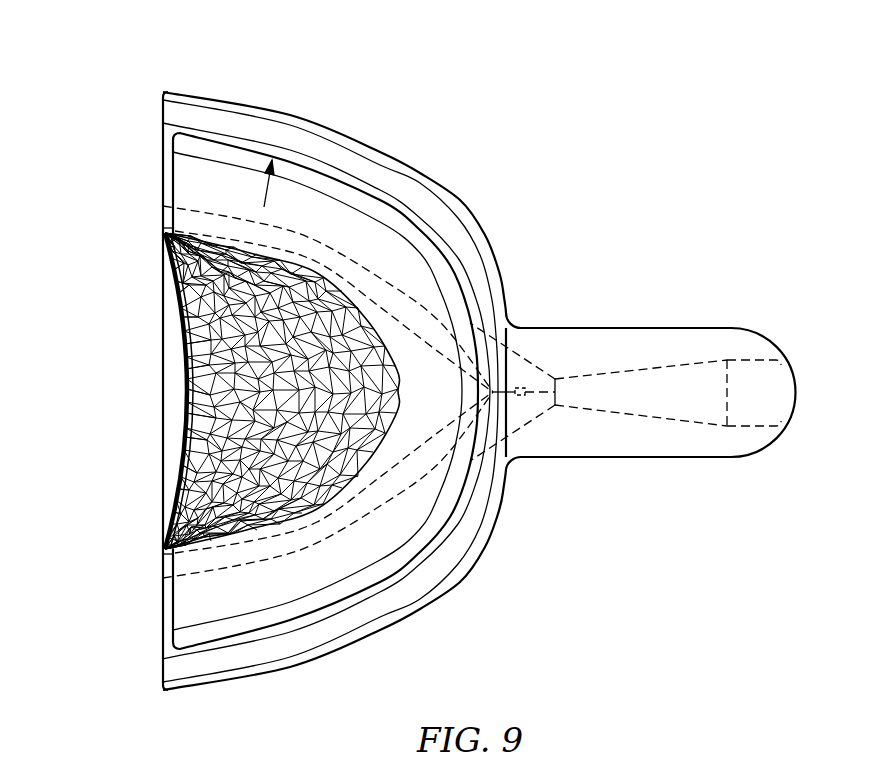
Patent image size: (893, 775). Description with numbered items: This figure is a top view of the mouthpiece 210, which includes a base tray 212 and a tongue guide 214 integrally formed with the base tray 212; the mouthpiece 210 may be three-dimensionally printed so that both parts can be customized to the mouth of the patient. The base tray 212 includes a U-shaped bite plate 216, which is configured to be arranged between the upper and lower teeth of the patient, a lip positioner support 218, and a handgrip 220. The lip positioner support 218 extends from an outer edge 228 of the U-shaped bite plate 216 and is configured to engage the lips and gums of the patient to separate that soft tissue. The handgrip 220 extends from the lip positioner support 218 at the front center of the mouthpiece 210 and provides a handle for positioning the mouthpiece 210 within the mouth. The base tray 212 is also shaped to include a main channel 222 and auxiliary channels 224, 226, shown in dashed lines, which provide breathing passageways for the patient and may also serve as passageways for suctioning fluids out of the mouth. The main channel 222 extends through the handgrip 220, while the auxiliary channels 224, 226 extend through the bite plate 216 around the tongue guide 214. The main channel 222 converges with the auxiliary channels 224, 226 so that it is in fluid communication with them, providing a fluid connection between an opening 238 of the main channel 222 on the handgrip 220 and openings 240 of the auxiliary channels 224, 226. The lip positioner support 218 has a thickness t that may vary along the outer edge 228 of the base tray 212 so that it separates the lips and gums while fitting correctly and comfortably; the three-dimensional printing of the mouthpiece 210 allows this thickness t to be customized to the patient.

The mouthpiece 210 is at (603, 213).
The base tray 212 is at (362, 110).
The tongue guide 214 is at (181, 421).
The U-shaped bite plate 216 is at (152, 179).
The lip positioner support 218 is at (212, 88).
The handgrip 220 is at (712, 305).
The main channel 222 is at (730, 352).
The auxiliary channel 224 is at (196, 576).
The auxiliary channel 226 is at (238, 214).
The outer edge 228 is at (273, 622).
The opening 238 is at (765, 397).
The openings 240 is at (178, 217).
The thickness t is at (283, 108).